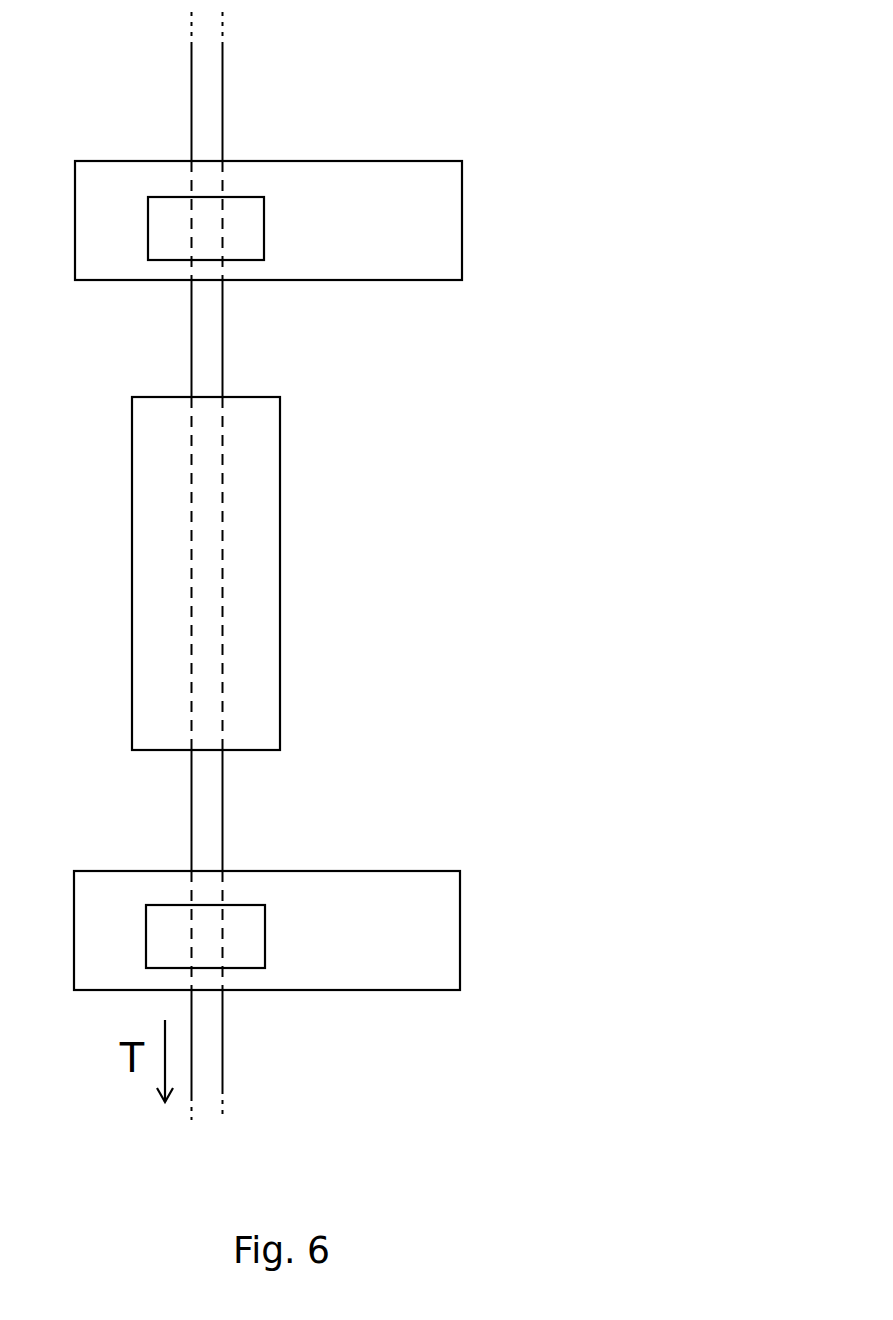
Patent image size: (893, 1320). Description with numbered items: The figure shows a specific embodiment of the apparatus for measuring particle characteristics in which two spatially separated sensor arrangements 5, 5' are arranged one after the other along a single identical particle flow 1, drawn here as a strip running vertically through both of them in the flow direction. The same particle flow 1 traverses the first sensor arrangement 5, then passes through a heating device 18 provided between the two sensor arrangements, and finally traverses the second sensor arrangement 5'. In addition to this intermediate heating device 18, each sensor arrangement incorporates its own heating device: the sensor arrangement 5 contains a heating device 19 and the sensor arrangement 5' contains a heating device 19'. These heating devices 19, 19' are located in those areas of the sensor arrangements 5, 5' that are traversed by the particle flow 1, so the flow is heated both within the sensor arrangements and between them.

The particle flow 1 is at (207, 1035).
The sensor arrangement 5 is at (288, 277).
The sensor arrangement 5' is at (333, 889).
The heating device 18 is at (290, 583).
The heating device 19 is at (266, 163).
The heating device 19' is at (289, 858).